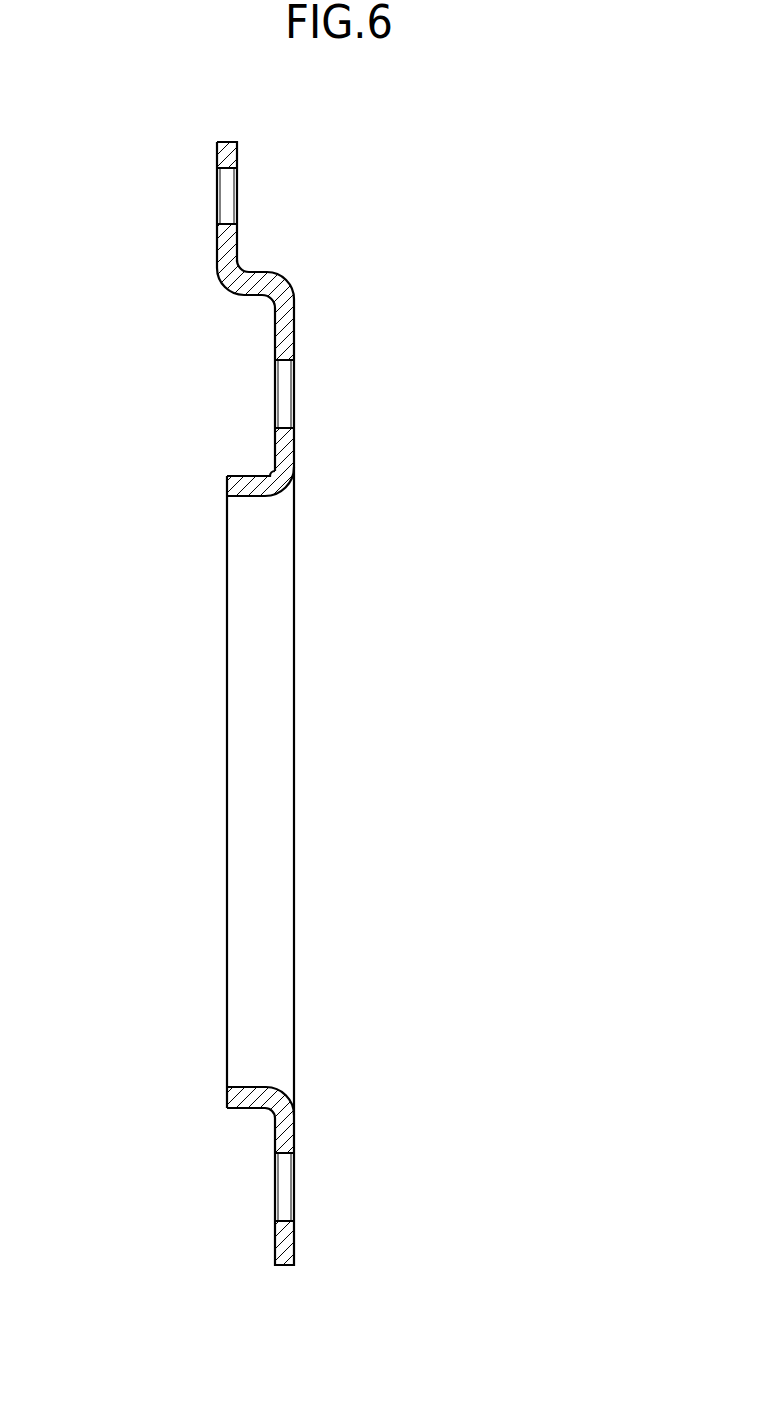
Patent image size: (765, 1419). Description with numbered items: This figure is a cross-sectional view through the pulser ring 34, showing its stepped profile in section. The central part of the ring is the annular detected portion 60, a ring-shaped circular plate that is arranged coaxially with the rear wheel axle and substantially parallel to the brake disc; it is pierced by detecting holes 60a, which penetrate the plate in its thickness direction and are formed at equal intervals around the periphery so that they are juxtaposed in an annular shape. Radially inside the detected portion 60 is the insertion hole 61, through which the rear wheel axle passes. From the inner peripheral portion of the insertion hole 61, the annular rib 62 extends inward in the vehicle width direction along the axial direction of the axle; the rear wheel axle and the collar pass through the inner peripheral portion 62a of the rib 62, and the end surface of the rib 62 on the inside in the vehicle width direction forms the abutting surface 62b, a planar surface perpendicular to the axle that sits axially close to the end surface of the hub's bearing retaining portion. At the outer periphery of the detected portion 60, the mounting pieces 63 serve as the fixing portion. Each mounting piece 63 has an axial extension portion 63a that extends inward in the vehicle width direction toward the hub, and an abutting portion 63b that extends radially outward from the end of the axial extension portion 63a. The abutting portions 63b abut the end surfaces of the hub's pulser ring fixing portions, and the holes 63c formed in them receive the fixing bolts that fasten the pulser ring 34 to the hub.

The pulser ring 34 is at (529, 144).
The annular detected portion 60 is at (362, 782).
The detecting holes 60a is at (283, 400).
The insertion hole 61 is at (283, 490).
The annular rib 62 is at (255, 496).
The inner peripheral portion 62a is at (267, 496).
The abutting surface 62b is at (227, 480).
The mounting pieces 63 is at (164, 165).
The axial extension portions 63a is at (258, 272).
The abutting portions 63b is at (217, 248).
The holes 63c is at (217, 191).